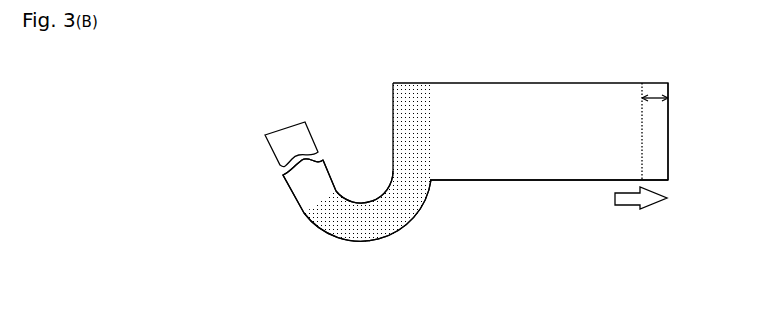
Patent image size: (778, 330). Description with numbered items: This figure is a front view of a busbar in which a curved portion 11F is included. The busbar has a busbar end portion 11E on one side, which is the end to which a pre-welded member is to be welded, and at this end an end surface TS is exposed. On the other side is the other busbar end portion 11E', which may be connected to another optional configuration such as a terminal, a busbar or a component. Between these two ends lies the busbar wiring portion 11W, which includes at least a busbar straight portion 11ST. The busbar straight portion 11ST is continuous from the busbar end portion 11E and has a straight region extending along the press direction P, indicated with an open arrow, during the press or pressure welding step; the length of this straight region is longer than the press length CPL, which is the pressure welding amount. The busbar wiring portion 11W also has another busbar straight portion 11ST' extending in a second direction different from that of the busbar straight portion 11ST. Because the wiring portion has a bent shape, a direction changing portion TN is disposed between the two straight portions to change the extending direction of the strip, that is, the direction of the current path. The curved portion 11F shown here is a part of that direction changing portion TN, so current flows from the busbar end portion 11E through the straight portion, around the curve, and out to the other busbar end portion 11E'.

The end surface TS is at (668, 145).
The direction changing portion TN is at (404, 110).
The curved portion 11F is at (362, 245).
The busbar wiring portion 11W is at (433, 217).
The busbar straight portion 11ST is at (549, 220).
The another busbar straight portion 11ST' is at (268, 212).
The other busbar end portion 11E' is at (296, 105).
The busbar end portion 11E is at (695, 131).
The press length CPL is at (650, 83).
The press direction P is at (641, 208).